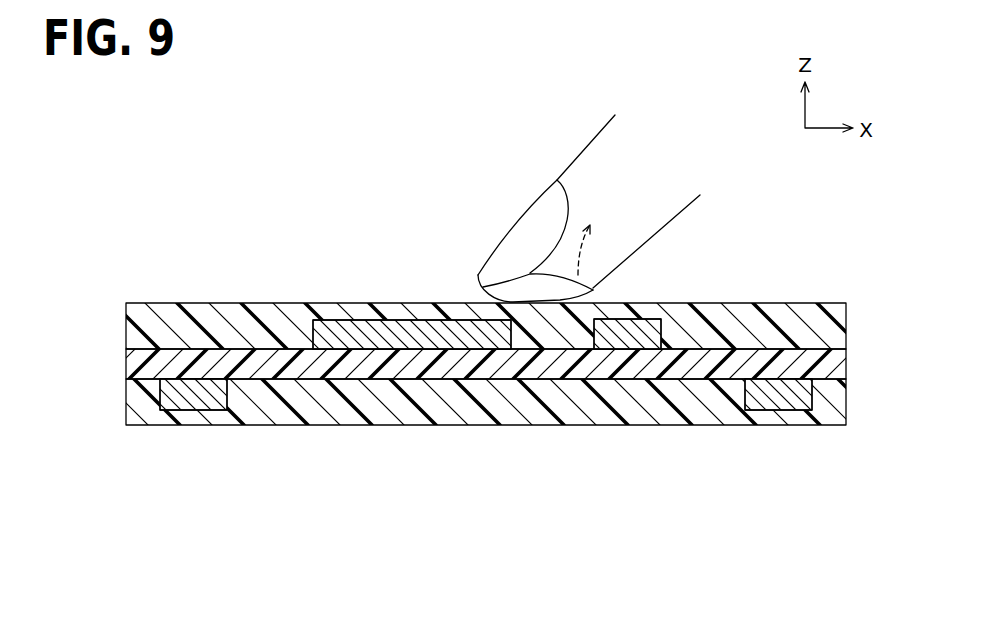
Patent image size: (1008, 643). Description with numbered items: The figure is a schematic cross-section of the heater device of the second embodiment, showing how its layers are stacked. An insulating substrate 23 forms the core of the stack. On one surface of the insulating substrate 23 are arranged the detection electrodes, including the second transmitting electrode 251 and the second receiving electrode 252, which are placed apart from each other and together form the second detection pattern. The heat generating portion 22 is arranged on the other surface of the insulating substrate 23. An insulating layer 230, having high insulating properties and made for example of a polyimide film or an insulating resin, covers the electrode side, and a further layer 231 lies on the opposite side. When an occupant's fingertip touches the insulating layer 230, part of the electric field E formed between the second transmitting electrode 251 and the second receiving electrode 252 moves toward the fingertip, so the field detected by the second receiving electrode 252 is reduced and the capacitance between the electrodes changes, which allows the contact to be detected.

The heat generating portion 22 is at (190, 403).
The insulating substrate 23 is at (528, 377).
The insulating layer 230 is at (837, 310).
The second surface layer 231 is at (827, 417).
The second transmitting electrode 251 is at (652, 328).
The second receiving electrode 252 is at (362, 328).
The electric field E is at (456, 332).